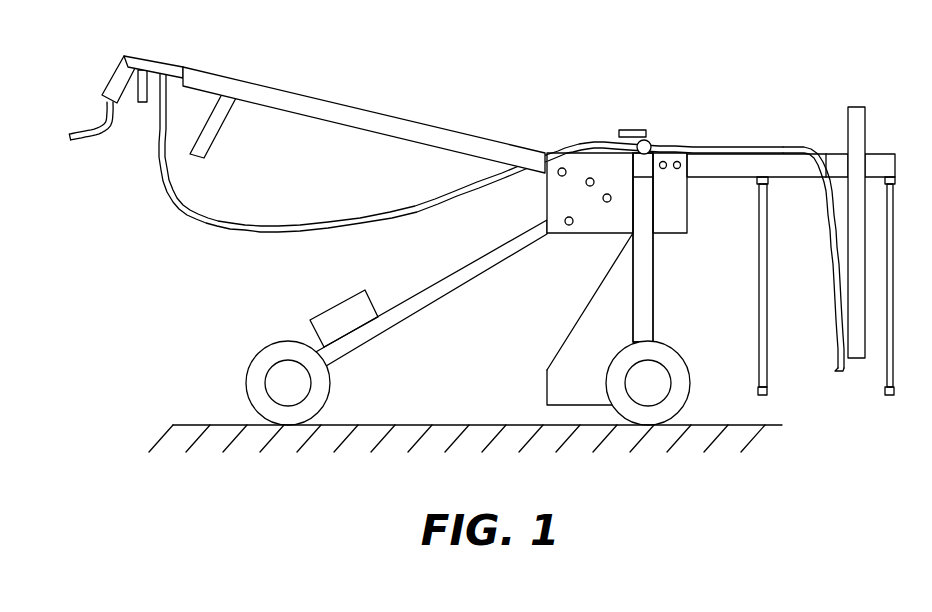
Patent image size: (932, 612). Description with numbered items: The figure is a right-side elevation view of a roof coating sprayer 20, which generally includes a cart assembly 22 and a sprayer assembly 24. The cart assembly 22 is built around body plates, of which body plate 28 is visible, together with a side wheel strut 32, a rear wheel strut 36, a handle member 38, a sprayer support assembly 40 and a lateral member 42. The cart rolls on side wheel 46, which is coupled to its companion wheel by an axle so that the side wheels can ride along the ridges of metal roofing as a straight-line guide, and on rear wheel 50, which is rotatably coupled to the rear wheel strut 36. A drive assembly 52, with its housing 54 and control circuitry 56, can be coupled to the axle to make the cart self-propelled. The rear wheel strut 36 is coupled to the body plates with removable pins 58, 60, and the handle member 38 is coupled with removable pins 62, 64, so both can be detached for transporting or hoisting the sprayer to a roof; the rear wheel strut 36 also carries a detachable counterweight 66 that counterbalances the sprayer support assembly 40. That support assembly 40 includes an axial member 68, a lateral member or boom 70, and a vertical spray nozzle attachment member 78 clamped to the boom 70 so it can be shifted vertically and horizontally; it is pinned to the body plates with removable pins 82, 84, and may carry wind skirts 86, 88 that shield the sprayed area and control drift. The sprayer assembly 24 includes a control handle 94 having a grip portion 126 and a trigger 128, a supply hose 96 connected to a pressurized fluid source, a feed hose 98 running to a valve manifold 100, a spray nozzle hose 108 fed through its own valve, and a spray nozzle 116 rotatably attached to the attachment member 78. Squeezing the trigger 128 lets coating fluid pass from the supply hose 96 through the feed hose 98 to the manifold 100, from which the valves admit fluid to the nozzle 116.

The roof coating sprayer 20 is at (438, 70).
The cart assembly 22 is at (560, 220).
The sprayer assembly 24 is at (650, 140).
The body plate 28 is at (665, 235).
The side wheel strut 32 is at (648, 327).
The rear wheel strut 36 is at (400, 320).
The handle member 38 is at (312, 92).
The sprayer support assembly 40 is at (791, 130).
The lateral member 42 is at (694, 211).
The side wheel 46 is at (680, 397).
The rear wheel 50 is at (257, 367).
The drive assembly 52 is at (570, 383).
The housing 54 is at (578, 357).
The control circuitry 56 is at (216, 130).
The removable pin 58 is at (569, 225).
The removable pin 60 is at (607, 203).
The removable pin 62 is at (562, 168).
The removable pin 64 is at (586, 184).
The detachable counterweight 66 is at (363, 300).
The axial member 68 is at (782, 152).
The lateral member (boom) 70 is at (837, 158).
The vertical spray nozzle attachment member 78 is at (858, 127).
The removable pin 82 is at (665, 168).
The removable pin 84 is at (680, 168).
The wind skirt 86 is at (767, 375).
The wind skirt 88 is at (895, 372).
The control handle 94 is at (136, 52).
The supply hose 96 is at (72, 140).
The feed hose 98 is at (196, 212).
The valve manifold 100 is at (634, 144).
The spray nozzle hose 108 is at (720, 148).
The spray nozzle 116 is at (840, 370).
The grip portion 126 is at (115, 83).
The trigger 128 is at (142, 104).